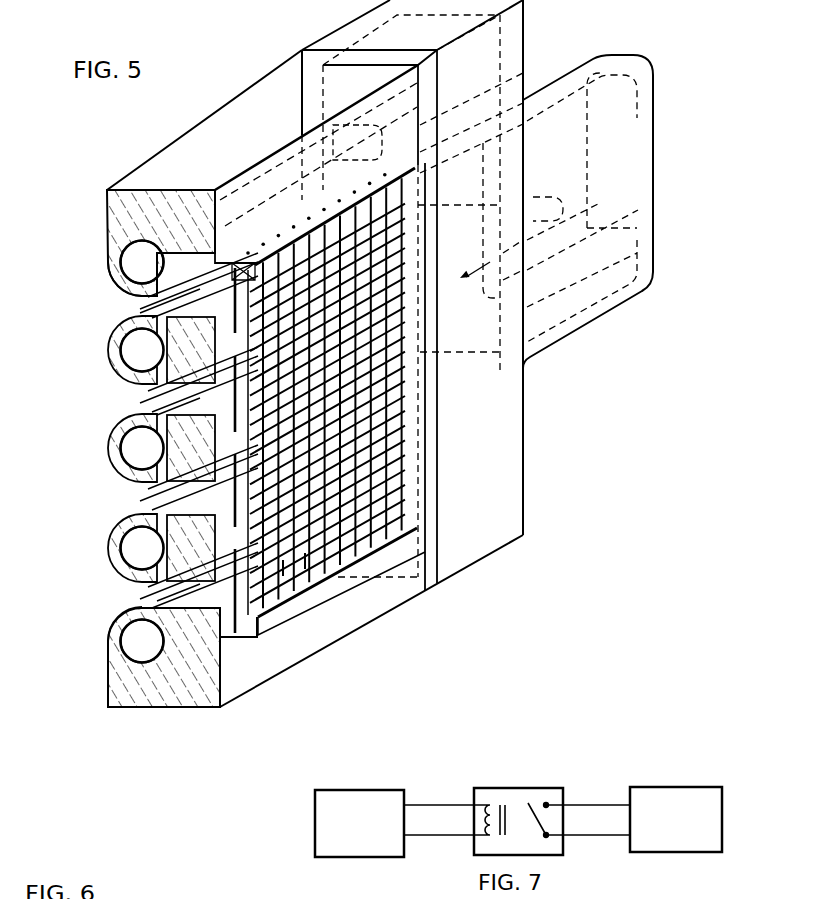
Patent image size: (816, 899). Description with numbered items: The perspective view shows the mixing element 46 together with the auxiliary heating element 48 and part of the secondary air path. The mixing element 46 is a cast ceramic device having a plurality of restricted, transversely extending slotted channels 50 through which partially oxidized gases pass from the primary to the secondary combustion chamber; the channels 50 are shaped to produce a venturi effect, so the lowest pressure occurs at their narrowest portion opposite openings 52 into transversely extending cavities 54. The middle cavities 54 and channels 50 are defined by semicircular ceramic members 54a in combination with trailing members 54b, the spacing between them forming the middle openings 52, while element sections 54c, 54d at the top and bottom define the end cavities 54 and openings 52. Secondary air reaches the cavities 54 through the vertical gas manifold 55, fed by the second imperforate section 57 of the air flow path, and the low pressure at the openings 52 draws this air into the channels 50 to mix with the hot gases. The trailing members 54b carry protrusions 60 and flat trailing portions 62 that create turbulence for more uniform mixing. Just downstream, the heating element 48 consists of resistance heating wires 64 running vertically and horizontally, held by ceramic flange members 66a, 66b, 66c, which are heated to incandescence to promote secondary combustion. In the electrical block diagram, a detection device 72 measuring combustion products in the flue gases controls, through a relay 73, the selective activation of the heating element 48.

In FIG. 5, the mixing element 46 is at (104, 463).
In FIG. 5, the auxiliary heating element 48 is at (380, 456).
In FIG. 7, the auxiliary heating element 48 is at (660, 787).
In FIG. 5, the slotted channels 50 is at (104, 303).
In FIG. 5, the openings 52 is at (140, 313).
In FIG. 5, the cavities 54 is at (125, 262).
In FIG. 5, the semicircular ceramic members 54a is at (112, 340).
In FIG. 5, the trailing members 54b is at (208, 362).
In FIG. 5, the element section 54c is at (106, 638).
In FIG. 5, the element section 54d is at (104, 272).
In FIG. 5, the gas manifold 55 is at (494, 469).
In FIG. 5, the second imperforate section 57 is at (584, 198).
In FIG. 5, the protrusions 60 is at (157, 601).
In FIG. 5, the flat trailing portions 62 is at (216, 345).
In FIG. 5, the resistance heating wires 64 is at (305, 566).
In FIG. 5, the ceramic flange member 66a is at (393, 172).
In FIG. 5, the ceramic flange member 66b is at (340, 577).
In FIG. 5, the ceramic flange member 66c is at (425, 493).
In FIG. 7, the detection device 72 is at (340, 790).
In FIG. 7, the relay 73 is at (507, 788).